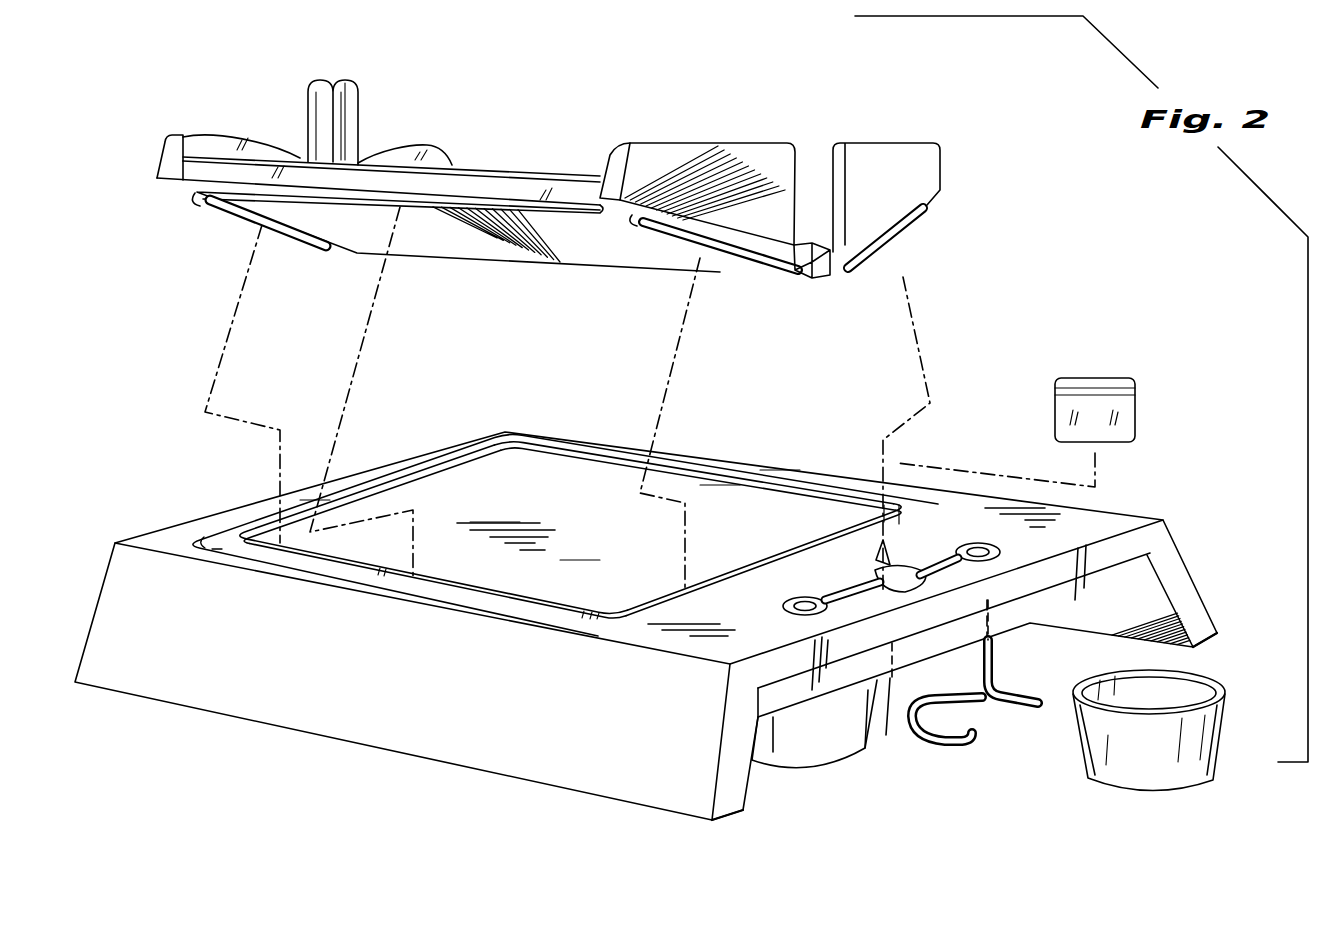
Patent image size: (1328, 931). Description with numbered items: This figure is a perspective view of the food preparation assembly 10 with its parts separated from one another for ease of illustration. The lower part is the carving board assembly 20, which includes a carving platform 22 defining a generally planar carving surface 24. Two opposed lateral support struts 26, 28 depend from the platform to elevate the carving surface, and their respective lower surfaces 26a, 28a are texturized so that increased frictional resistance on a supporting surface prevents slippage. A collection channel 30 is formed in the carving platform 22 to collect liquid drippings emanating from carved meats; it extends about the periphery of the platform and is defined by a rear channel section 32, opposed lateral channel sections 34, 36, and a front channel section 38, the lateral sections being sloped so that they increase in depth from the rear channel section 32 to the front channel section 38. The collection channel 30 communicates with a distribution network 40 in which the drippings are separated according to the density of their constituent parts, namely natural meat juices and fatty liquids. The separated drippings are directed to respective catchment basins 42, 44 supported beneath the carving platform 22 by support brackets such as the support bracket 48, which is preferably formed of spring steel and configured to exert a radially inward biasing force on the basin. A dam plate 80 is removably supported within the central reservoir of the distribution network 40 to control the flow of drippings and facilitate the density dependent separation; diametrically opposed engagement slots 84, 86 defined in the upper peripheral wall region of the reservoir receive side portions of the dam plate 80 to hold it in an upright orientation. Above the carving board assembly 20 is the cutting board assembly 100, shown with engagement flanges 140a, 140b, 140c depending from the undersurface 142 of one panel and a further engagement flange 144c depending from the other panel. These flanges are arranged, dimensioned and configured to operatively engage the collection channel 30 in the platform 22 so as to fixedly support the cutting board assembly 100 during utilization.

The food preparation assembly 10 is at (1035, 308).
The carving board assembly 20 is at (205, 749).
The carving platform 22 is at (627, 627).
The carving surface 24 is at (550, 506).
The lateral support strut 26 is at (740, 775).
The lower surface of lateral support strut 26a is at (732, 813).
The lateral support strut 28 is at (1177, 562).
The lower surface of lateral support strut 28a is at (1210, 643).
The collection channel 30 is at (215, 543).
The rear channel section 32 is at (468, 463).
The lateral channel section 34 is at (480, 590).
The lateral channel section 36 is at (740, 480).
The front channel section 38 is at (717, 588).
The distribution network 40 is at (915, 556).
The catchment basin 42 is at (848, 740).
The catchment basin 44 is at (1165, 770).
The support bracket 48 is at (962, 742).
The dam plate 80 is at (1095, 380).
The engagement slot 84 is at (857, 592).
The engagement slot 86 is at (995, 577).
The cutting board assembly 100 is at (518, 148).
The engagement flange 140a is at (532, 210).
The engagement flange 140b is at (222, 215).
The engagement flange 140c is at (670, 235).
The undersurface of panel 142 is at (437, 232).
The engagement flange 144c is at (920, 215).